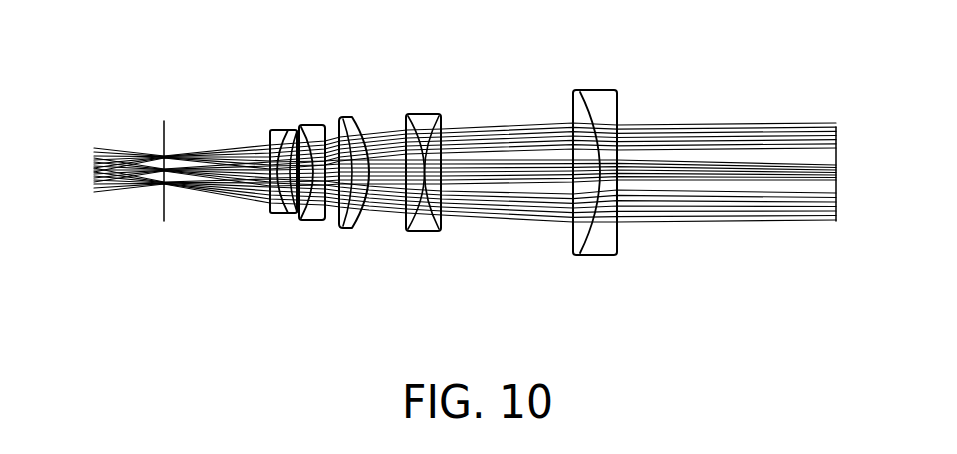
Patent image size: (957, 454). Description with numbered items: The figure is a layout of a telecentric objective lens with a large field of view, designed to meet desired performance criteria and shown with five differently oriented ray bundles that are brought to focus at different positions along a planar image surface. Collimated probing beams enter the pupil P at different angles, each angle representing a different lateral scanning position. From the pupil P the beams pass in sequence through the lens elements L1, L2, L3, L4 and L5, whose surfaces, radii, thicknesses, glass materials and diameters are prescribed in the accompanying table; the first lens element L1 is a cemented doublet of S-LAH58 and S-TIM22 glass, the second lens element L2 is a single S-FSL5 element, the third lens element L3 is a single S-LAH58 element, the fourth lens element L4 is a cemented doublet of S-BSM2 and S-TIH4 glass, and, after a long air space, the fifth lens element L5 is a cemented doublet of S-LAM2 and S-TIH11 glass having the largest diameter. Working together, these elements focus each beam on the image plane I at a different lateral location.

The pupil P is at (164, 210).
The lens element L1 is at (281, 216).
The lens element L2 is at (311, 125).
The lens element L3 is at (345, 228).
The lens element L4 is at (423, 113).
The lens element L5 is at (595, 254).
The image plane I is at (838, 187).